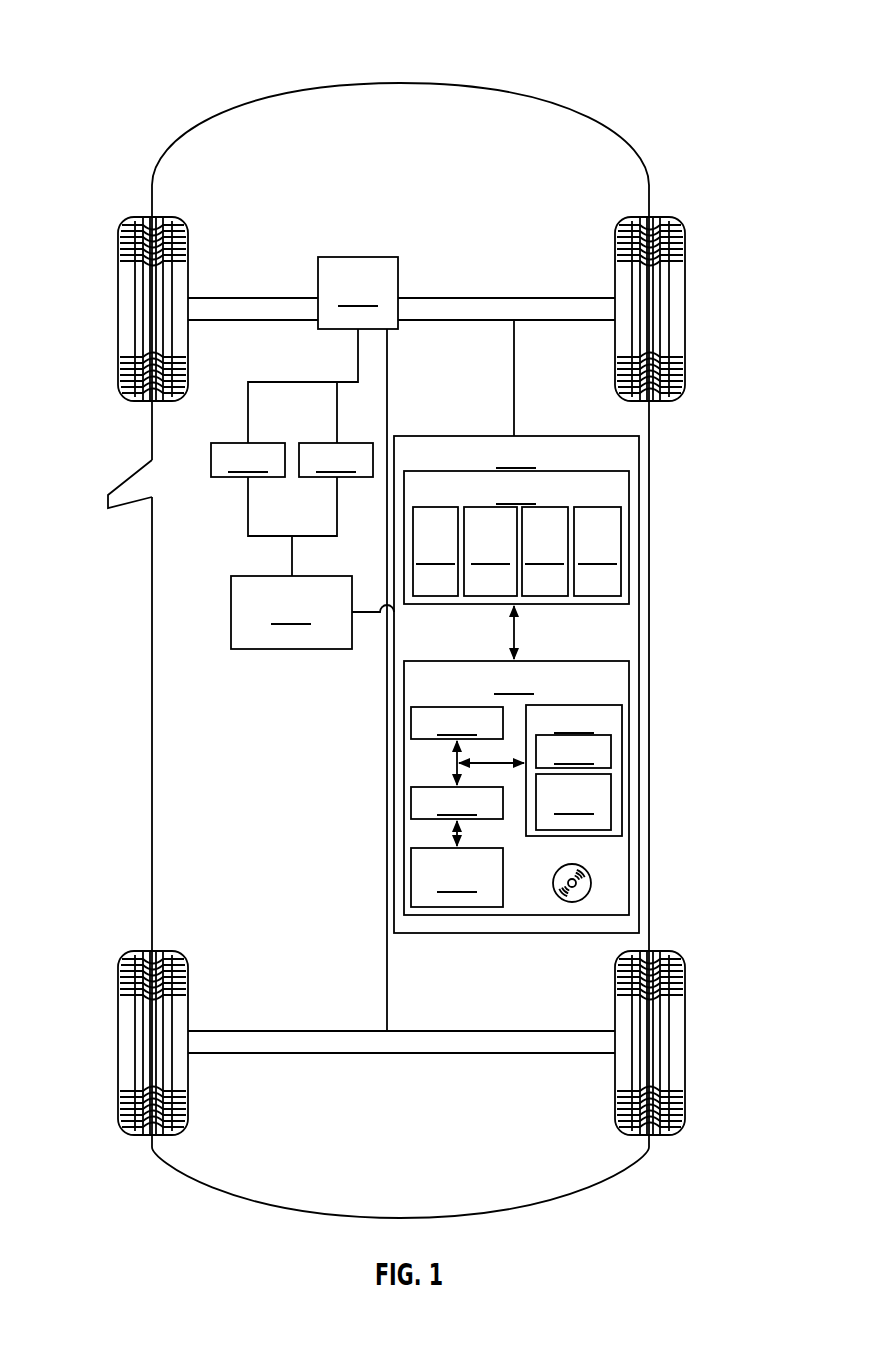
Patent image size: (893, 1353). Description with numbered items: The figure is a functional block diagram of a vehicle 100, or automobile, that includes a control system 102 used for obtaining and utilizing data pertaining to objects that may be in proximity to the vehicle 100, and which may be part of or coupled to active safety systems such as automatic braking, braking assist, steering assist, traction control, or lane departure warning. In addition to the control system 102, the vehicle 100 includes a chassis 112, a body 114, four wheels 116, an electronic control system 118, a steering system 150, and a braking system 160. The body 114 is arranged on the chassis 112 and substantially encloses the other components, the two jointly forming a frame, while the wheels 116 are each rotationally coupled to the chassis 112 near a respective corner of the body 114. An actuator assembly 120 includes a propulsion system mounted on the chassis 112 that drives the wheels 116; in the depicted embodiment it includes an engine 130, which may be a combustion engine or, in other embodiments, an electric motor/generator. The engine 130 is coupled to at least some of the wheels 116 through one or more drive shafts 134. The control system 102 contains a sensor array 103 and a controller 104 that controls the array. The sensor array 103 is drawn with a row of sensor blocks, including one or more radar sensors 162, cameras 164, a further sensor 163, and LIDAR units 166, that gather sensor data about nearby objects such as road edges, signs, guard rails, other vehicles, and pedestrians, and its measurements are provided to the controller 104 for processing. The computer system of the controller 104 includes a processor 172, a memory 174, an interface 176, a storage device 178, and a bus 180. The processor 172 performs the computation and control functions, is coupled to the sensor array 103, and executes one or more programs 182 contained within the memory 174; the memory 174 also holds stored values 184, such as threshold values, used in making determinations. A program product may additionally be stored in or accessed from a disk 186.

The vehicle 100 is at (131, 46).
The control system 102 is at (519, 692).
The sensor array 103 is at (516, 537).
The controller 104 is at (519, 804).
The chassis 112 is at (385, 978).
The body 114 is at (152, 820).
The wheels 116 is at (118, 243).
The electronic control system 118 is at (312, 612).
The actuator assembly 120 is at (368, 315).
The engine 130 is at (360, 257).
The drive shafts 134 is at (268, 298).
The steering system 150 is at (248, 459).
The braking system 160 is at (336, 459).
The radar sensors 162 is at (435, 551).
The sensor 163 is at (545, 551).
The cameras 164 is at (490, 551).
The LIDAR units 166 is at (597, 551).
The processor 172 is at (457, 721).
The memory 174 is at (574, 769).
The interface 176 is at (457, 801).
The storage device 178 is at (457, 877).
The bus 180 is at (457, 768).
The program 182 is at (573, 750).
The stored values 184 is at (573, 802).
The disk 186 is at (590, 890).